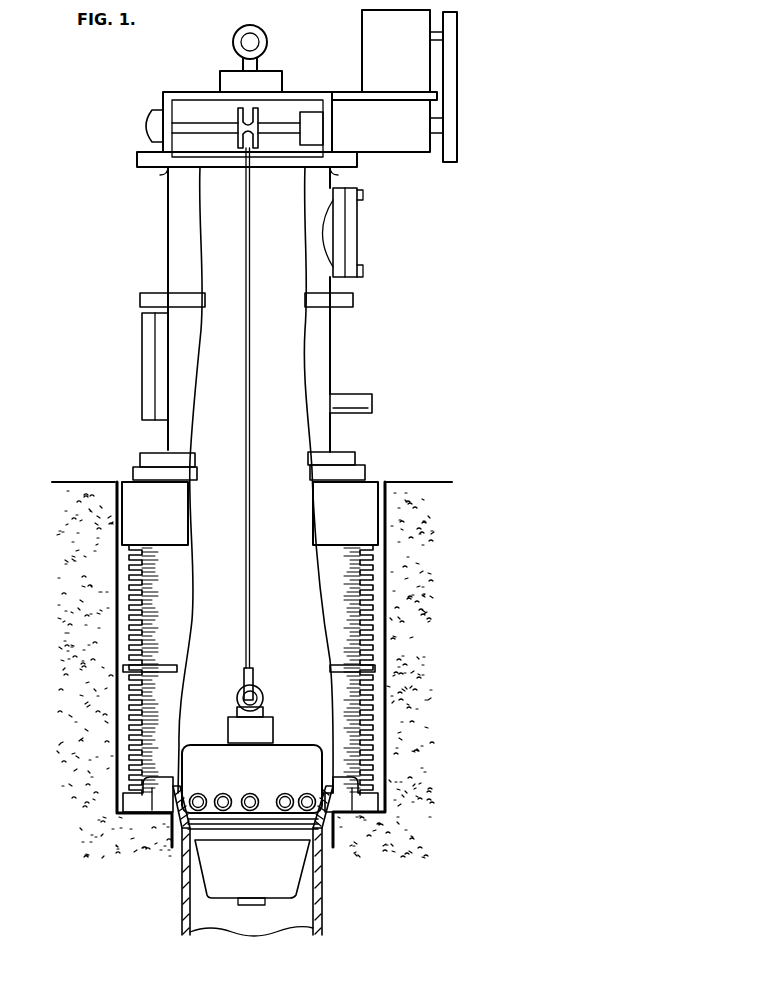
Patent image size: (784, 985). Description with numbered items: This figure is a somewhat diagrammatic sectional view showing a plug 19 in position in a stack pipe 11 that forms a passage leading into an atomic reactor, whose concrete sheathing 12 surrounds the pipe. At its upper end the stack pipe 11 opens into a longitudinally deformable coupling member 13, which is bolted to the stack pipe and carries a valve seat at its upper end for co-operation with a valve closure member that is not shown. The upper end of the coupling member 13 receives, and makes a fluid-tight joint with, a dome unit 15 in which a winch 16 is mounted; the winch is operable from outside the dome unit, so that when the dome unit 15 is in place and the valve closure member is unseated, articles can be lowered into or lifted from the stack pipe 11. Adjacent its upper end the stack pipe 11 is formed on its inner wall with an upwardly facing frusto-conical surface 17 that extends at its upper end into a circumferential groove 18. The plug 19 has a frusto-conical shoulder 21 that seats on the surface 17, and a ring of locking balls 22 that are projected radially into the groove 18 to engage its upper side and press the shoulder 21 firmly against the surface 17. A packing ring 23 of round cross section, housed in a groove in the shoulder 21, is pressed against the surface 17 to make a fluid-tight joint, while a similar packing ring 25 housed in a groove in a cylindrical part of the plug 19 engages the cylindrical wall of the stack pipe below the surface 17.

The stack pipe 11 is at (320, 895).
The concrete sheathing 12 is at (420, 500).
The longitudinally deformable coupling member 13 is at (350, 627).
The dome unit 15 is at (324, 368).
The winch 16 is at (331, 86).
The frusto-conical surface 17 is at (177, 822).
The circumferential groove 18 is at (173, 797).
The plug 19 is at (230, 885).
The frusto-conical shoulder 21 is at (320, 822).
The locking balls 22 is at (309, 796).
The packing ring 23 is at (196, 795).
The packing ring 25 is at (189, 824).